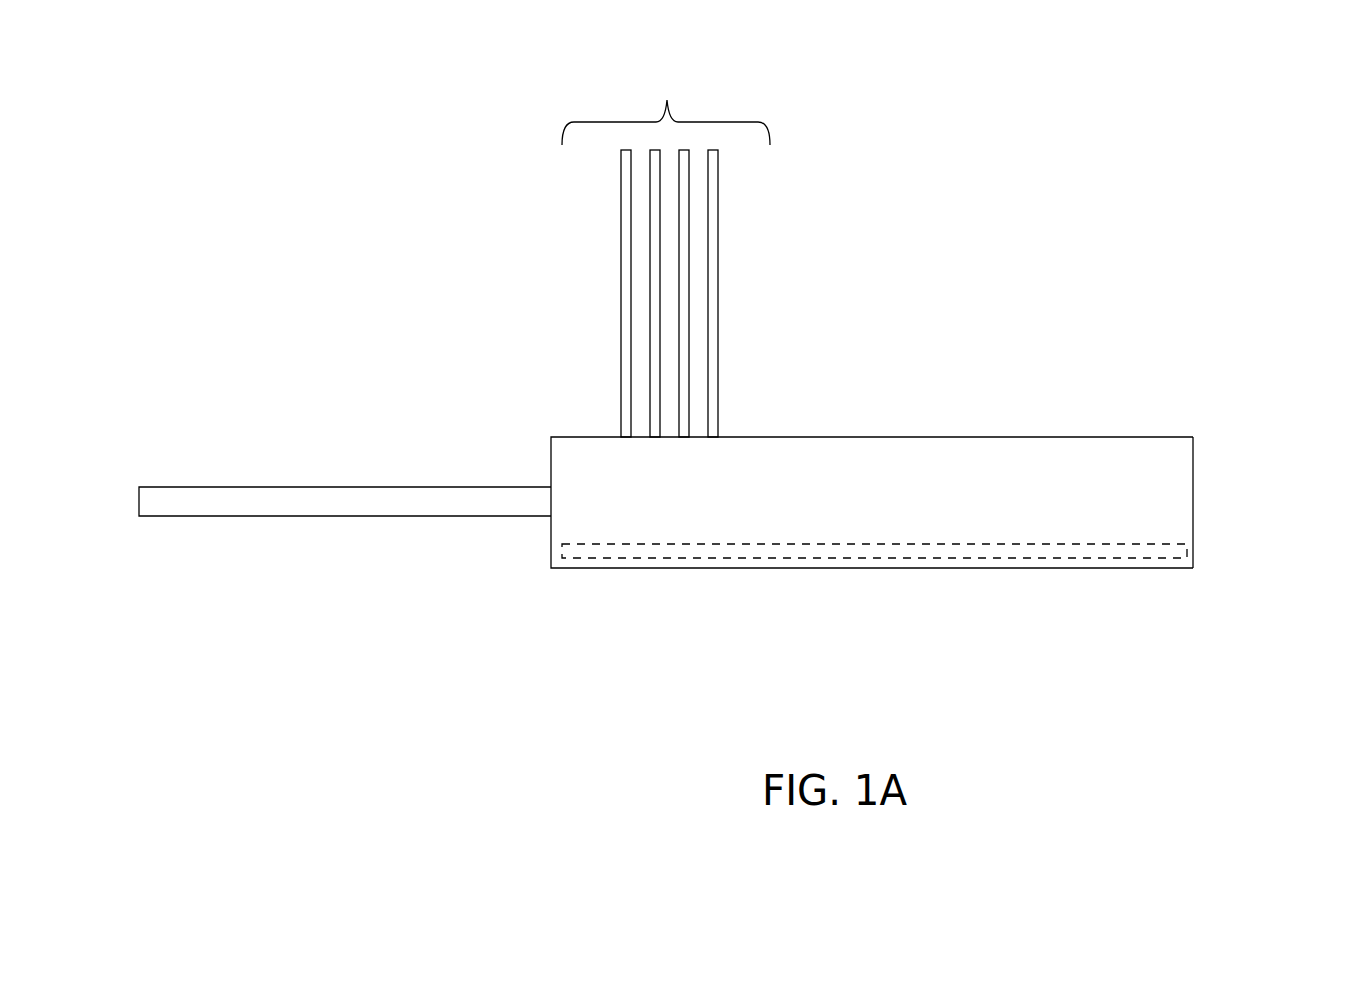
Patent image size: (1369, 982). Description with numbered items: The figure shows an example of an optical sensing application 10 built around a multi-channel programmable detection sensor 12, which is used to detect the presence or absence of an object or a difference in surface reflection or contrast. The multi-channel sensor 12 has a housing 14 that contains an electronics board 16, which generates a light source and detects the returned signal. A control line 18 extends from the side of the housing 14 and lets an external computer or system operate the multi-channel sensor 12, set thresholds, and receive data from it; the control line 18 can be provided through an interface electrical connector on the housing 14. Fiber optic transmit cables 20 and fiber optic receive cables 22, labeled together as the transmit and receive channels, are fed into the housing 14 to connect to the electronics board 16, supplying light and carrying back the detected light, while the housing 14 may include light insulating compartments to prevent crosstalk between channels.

The optical sensing application 10 is at (1090, 252).
The multi-channel programmable detection sensor 12 is at (1088, 418).
The housing 14 is at (1195, 470).
The electronics board 16 is at (1110, 552).
The control line 18 is at (415, 500).
The fiber optic transmit cables 20 is at (718, 267).
The fiber optic receive cables 22 is at (747, 293).